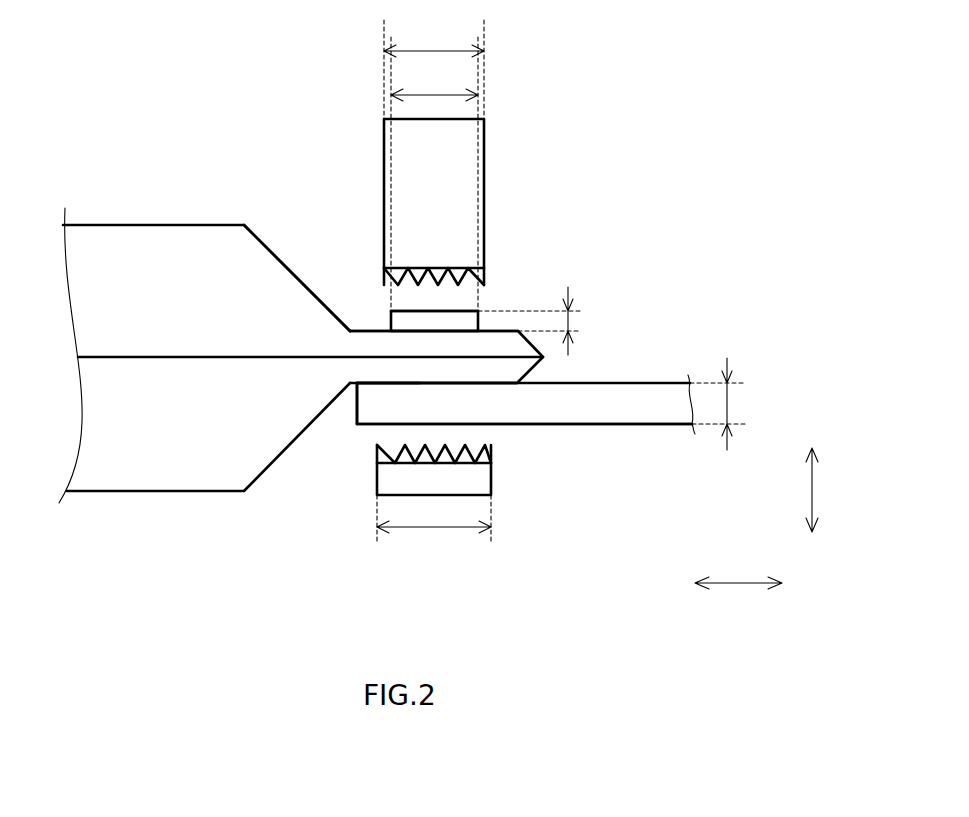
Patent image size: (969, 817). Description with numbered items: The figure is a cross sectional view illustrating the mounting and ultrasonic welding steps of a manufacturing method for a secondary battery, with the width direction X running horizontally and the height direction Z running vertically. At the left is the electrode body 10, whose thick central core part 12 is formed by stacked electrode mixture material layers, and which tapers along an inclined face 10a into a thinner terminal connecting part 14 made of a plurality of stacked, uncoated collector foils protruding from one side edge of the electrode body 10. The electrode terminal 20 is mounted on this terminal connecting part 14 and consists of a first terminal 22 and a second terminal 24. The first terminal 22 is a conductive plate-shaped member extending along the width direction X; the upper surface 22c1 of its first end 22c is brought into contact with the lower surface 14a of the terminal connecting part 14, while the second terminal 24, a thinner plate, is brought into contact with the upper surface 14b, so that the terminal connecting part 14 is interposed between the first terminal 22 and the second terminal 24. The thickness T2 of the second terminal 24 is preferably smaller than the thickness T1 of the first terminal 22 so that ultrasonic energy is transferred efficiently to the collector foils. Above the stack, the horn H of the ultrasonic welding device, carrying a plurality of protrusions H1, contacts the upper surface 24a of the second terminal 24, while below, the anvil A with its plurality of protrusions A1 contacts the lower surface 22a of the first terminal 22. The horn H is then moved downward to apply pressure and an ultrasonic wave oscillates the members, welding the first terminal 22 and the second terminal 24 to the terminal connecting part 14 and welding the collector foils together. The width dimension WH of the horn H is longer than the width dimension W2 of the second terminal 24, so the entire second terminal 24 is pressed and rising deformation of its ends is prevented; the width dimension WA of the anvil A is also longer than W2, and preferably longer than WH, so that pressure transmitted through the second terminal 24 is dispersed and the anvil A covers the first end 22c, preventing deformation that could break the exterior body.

The electrode body 10 is at (341, 309).
The core part 12 is at (185, 232).
The inclined surface of holder 10a is at (273, 232).
The terminal connecting part 14 is at (455, 325).
The lower surface of terminal connecting part 14a is at (485, 386).
The upper surface of terminal connecting part 14b is at (372, 330).
The electrode terminal 20 is at (491, 378).
The first terminal 22 is at (489, 408).
The lower surface of first terminal 22a is at (650, 425).
The first end of first terminal 22c is at (365, 403).
The upper surface of first end 22c1 is at (403, 377).
The second terminal 24 is at (484, 279).
The upper surface of second terminal 24a is at (403, 307).
The horn H is at (482, 202).
The protrusions of horn H1 is at (487, 273).
The anvil A is at (476, 491).
The protrusions of anvil A1 is at (491, 457).
The width dimension of horn WH is at (434, 69).
The width dimension of second terminal W2 is at (434, 174).
The width dimension of anvil WA is at (434, 529).
The thickness of first terminal T1 is at (726, 404).
The thickness of second terminal T2 is at (545, 321).
The width direction X is at (738, 596).
The height direction Z is at (823, 490).